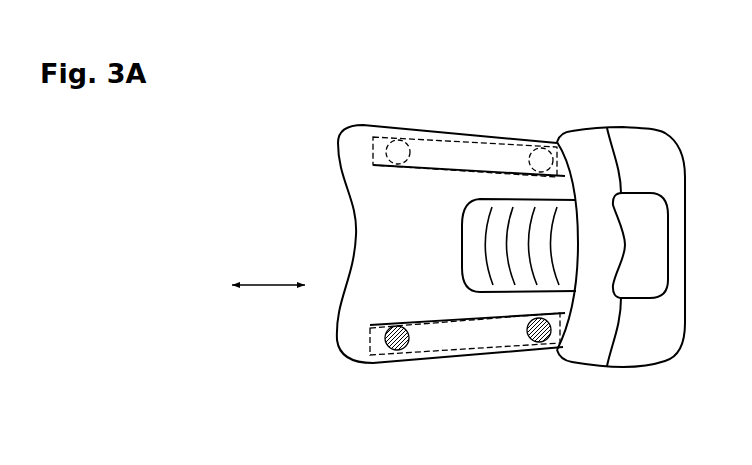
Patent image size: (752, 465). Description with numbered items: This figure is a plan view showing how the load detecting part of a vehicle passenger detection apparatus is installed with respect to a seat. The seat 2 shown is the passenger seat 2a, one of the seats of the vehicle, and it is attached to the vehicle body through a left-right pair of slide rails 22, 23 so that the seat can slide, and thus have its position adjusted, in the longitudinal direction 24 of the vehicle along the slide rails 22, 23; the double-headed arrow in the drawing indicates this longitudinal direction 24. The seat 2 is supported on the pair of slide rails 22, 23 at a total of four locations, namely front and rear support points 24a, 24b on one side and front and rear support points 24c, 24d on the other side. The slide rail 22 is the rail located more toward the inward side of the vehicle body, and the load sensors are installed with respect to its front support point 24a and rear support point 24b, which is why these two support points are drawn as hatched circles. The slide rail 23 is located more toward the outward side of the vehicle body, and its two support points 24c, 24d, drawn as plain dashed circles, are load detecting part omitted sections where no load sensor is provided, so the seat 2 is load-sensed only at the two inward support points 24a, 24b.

The seat 2 is at (456, 246).
The passenger seat 2a is at (353, 233).
The slide rail 22 is at (437, 355).
The slide rail 23 is at (472, 137).
The longitudinal direction 24 is at (268, 272).
The front support point 24a is at (387, 349).
The rear support point 24b is at (530, 348).
The support point 24c is at (405, 139).
The support point 24d is at (543, 144).